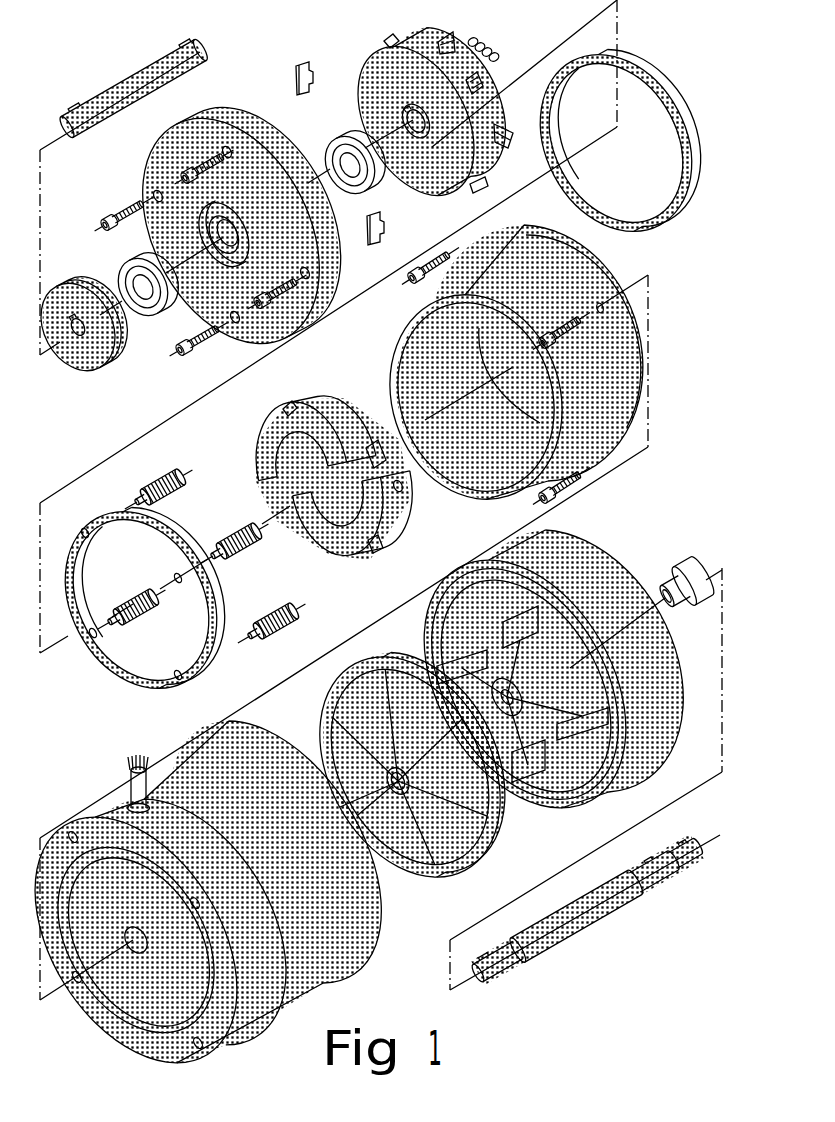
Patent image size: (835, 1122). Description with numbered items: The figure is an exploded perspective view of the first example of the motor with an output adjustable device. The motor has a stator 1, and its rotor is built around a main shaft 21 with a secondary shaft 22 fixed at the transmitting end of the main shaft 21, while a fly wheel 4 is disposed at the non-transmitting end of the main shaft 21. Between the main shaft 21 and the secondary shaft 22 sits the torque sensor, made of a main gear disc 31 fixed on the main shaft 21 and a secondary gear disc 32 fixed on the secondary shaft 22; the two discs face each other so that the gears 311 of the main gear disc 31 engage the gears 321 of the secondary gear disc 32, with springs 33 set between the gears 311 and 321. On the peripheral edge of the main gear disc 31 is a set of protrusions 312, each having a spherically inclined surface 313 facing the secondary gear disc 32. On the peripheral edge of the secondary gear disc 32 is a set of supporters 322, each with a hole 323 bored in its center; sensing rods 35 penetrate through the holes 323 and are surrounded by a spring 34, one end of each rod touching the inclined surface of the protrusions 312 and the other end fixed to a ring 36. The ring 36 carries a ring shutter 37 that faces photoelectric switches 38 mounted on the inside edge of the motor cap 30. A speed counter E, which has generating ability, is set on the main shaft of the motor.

The stator 1 is at (245, 790).
The main shaft 21 is at (597, 878).
The secondary shaft 22 is at (204, 47).
The motor cap 30 is at (219, 118).
The main gear disc 31 is at (332, 400).
The gears 311 is at (260, 440).
The protrusions 312 is at (291, 406).
The spherically inclined surface 313 is at (384, 480).
The secondary gear disc 32 is at (404, 488).
The gears 321 is at (503, 168).
The supporters 322 is at (394, 36).
The hole 323 is at (432, 147).
The springs 33 is at (489, 42).
The spring 34 is at (226, 520).
The sensing rods 35 is at (147, 453).
The ring 36 is at (158, 522).
The ring shutter 37 is at (632, 70).
The photoelectric switches 38 is at (304, 43).
The fly wheel 4 is at (382, 664).
The speed counter E is at (697, 570).